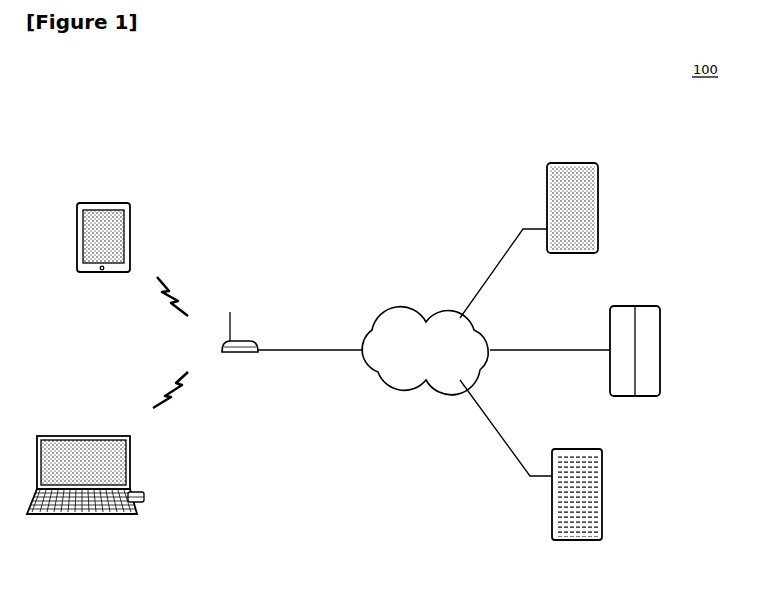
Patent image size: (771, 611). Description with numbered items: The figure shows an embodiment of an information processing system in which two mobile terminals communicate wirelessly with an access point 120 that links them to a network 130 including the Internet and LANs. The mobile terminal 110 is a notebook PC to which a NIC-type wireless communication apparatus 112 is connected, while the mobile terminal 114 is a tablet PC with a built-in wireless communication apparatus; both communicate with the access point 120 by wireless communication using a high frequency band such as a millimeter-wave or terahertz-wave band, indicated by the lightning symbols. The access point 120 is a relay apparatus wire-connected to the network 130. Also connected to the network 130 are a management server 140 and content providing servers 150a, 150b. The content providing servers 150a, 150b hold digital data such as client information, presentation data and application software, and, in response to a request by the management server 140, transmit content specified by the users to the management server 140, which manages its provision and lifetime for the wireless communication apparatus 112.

The mobile terminal 110 is at (88, 435).
The wireless communication apparatus 112 is at (150, 487).
The mobile terminal 114 is at (107, 203).
The access point 120 is at (240, 356).
The network 130 is at (413, 316).
The management server 140 is at (572, 163).
The content providing server 150a is at (637, 306).
The content providing server 150b is at (577, 449).